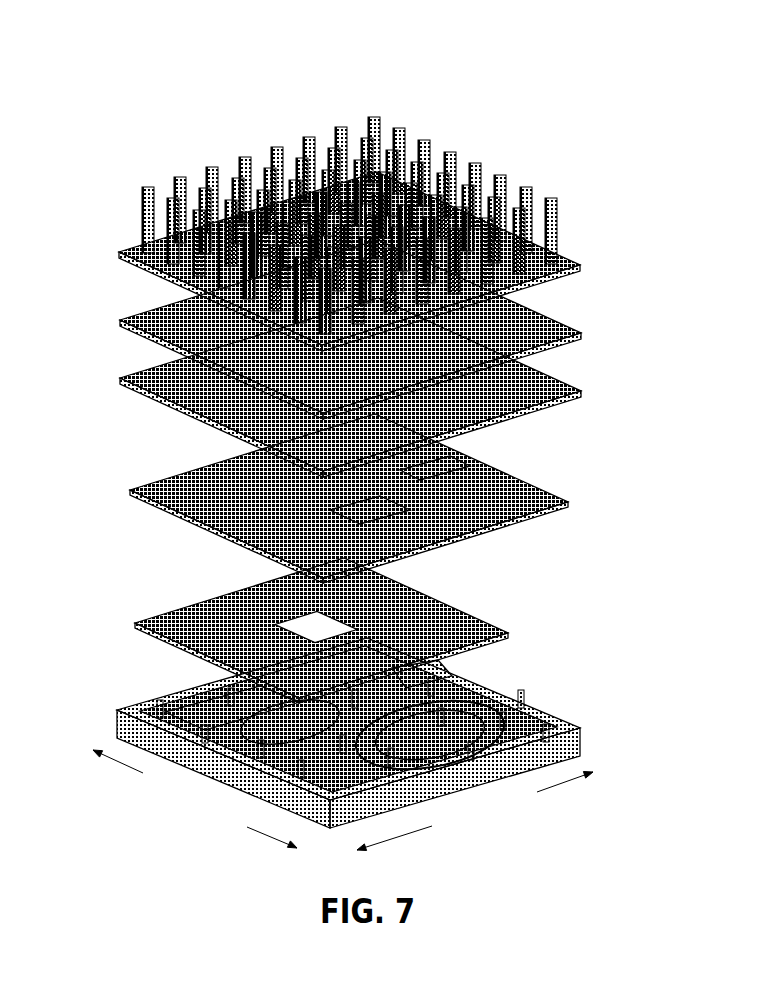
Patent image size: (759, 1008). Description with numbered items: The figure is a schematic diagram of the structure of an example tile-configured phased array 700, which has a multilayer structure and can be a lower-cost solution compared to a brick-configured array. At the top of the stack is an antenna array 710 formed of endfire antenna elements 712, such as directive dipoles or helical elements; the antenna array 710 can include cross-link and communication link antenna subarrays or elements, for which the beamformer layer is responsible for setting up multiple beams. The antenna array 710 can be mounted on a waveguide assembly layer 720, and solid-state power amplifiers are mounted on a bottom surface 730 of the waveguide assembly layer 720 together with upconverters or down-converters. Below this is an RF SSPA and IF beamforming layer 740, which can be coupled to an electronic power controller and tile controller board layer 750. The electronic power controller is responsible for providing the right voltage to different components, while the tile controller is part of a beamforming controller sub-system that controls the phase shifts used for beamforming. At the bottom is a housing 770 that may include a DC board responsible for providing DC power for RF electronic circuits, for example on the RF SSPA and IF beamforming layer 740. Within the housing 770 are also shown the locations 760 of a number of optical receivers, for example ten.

The tile-configured phased array 700 is at (132, 90).
The antenna array 710 is at (600, 265).
The endfire antenna elements 712 is at (495, 185).
The waveguide assembly layer 720 is at (415, 358).
The bottom surface 730 is at (588, 328).
The RF SSPA and IF beamforming layer 740 is at (541, 530).
The electronic power controller and tile controller board layer 750 is at (459, 600).
The locations of optical receivers 760 is at (454, 674).
The housing 770 is at (594, 740).